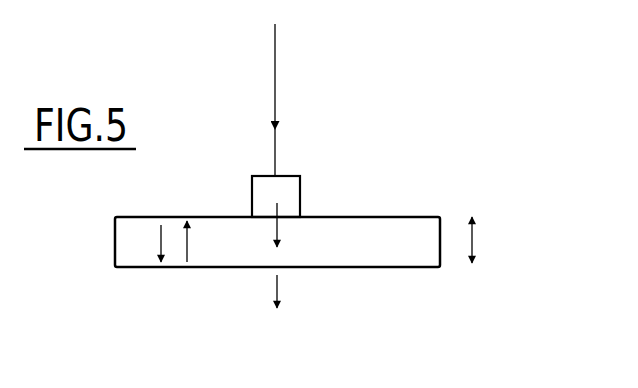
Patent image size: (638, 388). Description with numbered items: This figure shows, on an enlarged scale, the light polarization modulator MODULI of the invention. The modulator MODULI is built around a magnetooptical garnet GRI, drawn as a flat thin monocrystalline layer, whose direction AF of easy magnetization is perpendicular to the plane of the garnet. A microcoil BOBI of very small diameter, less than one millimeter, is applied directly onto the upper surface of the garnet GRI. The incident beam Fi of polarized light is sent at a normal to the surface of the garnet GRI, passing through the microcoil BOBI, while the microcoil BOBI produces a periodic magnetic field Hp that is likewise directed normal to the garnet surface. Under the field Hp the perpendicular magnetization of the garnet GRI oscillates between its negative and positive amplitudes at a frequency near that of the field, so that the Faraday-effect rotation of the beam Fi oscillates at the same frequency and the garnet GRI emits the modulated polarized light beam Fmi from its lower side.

The magnetooptical garnet GRI is at (176, 269).
The microcoil BOBI is at (300, 198).
The modulator MODULI is at (459, 181).
The incident beam Fi is at (291, 100).
The periodic magnetic field Hp is at (300, 228).
The modulated polarized light beam Fmi is at (302, 291).
The direction of easy magnetization AF is at (491, 240).